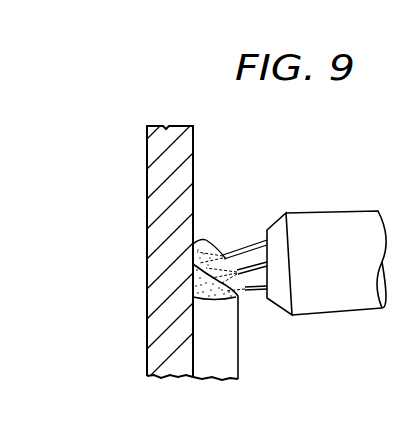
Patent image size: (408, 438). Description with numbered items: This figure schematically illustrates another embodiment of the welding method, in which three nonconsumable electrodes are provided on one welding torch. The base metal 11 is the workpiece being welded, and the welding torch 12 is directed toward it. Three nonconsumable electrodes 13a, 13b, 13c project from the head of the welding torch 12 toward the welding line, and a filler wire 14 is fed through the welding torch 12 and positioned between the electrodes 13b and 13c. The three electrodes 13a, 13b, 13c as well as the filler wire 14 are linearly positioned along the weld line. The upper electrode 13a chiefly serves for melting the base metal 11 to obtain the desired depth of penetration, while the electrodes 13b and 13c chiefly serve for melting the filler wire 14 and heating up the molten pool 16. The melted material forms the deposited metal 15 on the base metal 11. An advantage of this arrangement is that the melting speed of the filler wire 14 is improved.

The base metal 11 is at (190, 150).
The welding torch 12 is at (329, 217).
The upper electrode 13a is at (245, 245).
The nonconsumable electrode 13b is at (257, 296).
The nonconsumable electrode 13c is at (206, 238).
The filler wire 14 is at (268, 267).
The deposited metal 15 is at (231, 369).
The molten pool 16 is at (199, 288).